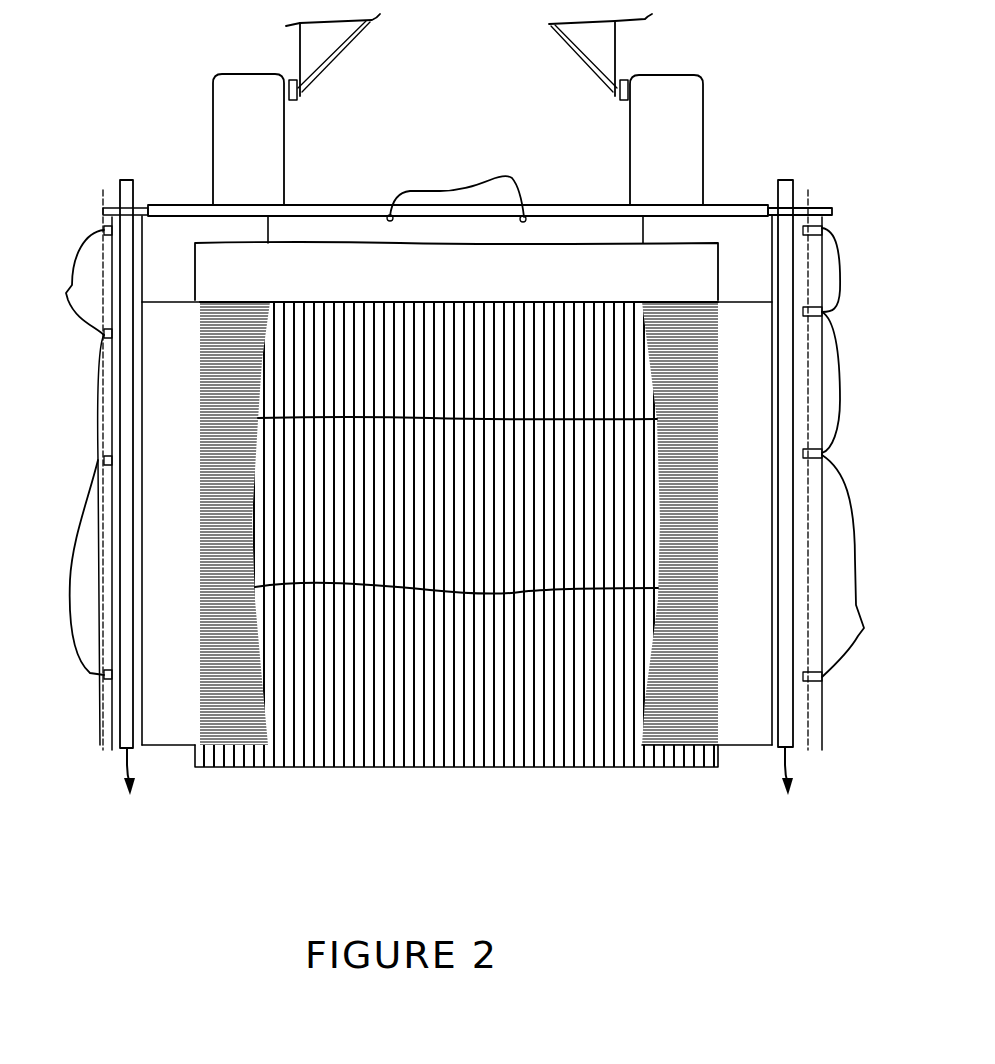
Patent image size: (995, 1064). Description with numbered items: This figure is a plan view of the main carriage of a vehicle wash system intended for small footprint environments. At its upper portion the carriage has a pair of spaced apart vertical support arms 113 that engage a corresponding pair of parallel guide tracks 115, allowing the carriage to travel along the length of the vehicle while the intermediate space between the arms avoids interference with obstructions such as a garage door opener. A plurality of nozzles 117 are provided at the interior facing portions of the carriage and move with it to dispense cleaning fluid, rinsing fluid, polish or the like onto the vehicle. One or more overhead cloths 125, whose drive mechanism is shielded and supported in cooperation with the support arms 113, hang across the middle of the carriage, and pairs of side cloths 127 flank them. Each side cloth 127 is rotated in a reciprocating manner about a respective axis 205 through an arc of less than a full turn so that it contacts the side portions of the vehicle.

The vertical support arms 113 is at (213, 133).
The guide tracks 115 is at (300, 97).
The nozzles 117 is at (512, 177).
The overhead cloths 125 is at (433, 766).
The side cloths 127 is at (195, 524).
The axes 205 is at (125, 160).